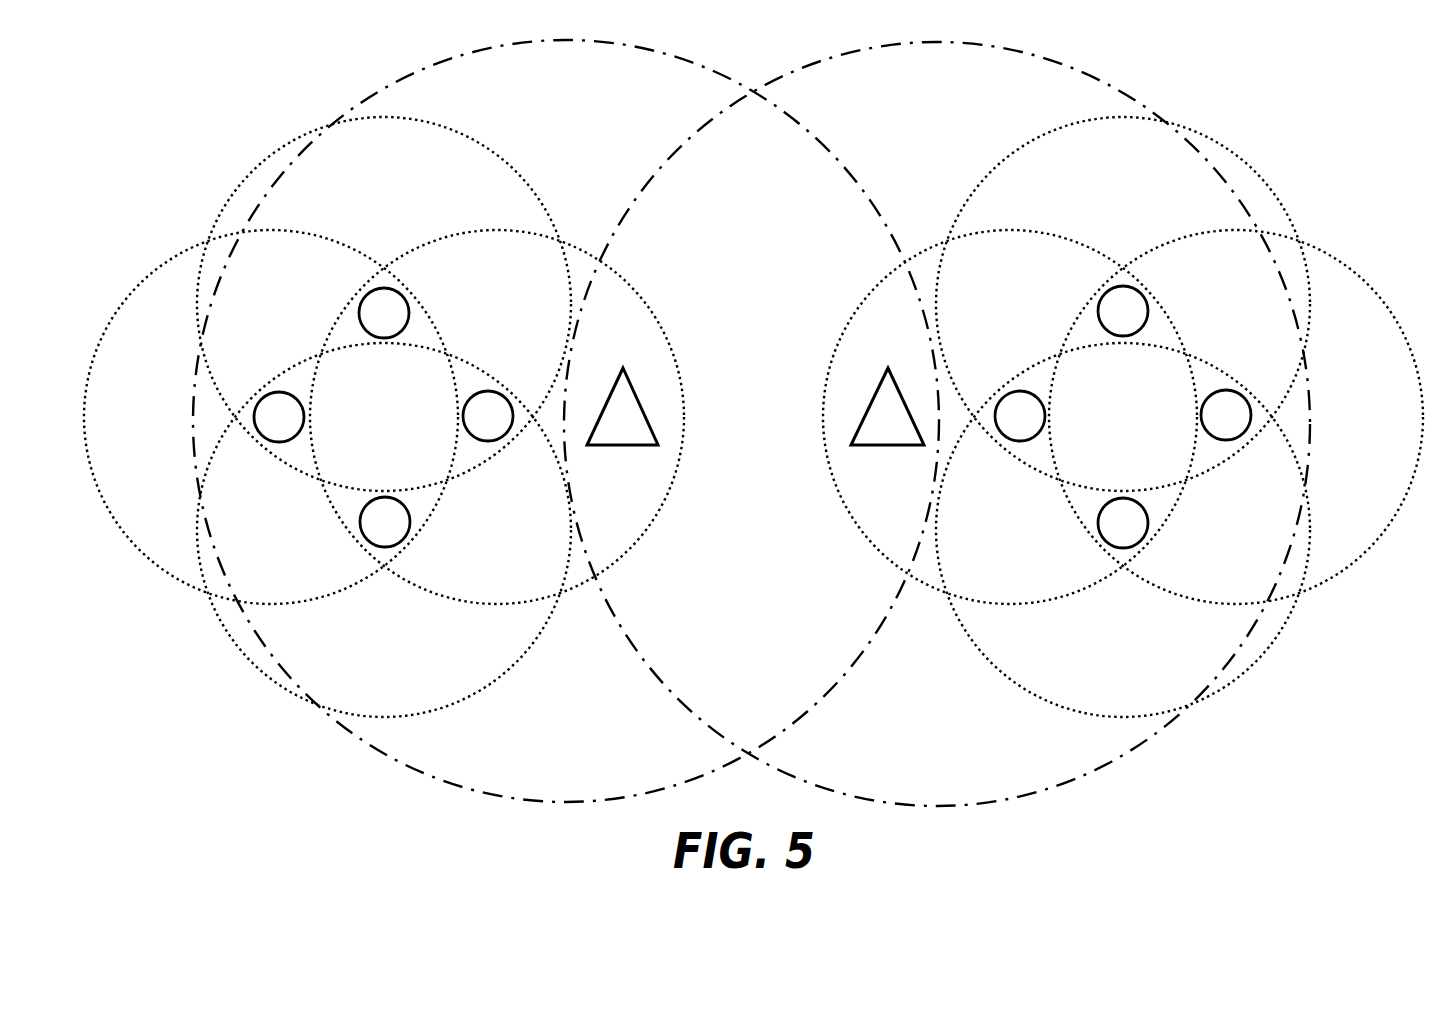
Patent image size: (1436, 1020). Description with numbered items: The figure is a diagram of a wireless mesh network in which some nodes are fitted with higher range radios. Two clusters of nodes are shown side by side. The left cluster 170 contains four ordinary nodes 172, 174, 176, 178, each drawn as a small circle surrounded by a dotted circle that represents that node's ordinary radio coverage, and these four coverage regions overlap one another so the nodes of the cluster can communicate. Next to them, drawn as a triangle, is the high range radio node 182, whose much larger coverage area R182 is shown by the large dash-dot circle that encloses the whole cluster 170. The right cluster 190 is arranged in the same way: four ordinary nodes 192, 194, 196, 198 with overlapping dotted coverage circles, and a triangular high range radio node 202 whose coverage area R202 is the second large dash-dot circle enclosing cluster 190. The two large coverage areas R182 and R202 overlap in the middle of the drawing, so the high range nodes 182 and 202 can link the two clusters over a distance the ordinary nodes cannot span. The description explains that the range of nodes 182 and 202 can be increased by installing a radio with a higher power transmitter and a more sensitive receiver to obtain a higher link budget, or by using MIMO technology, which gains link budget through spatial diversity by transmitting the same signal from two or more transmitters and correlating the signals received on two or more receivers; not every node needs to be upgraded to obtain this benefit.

The cluster 170 is at (384, 452).
The sensor 172 is at (368, 323).
The sensor 174 is at (472, 426).
The sensor 176 is at (369, 532).
The sensor 178 is at (263, 427).
The high range radio node 182 is at (609, 438).
The coverage area R182 is at (443, 61).
The cluster 190 is at (1123, 456).
The sensor 192 is at (1107, 321).
The sensor 194 is at (1210, 425).
The sensor 196 is at (1107, 533).
The sensor 198 is at (1004, 426).
The high range radio node 202 is at (872, 438).
The coverage area R202 is at (1060, 63).